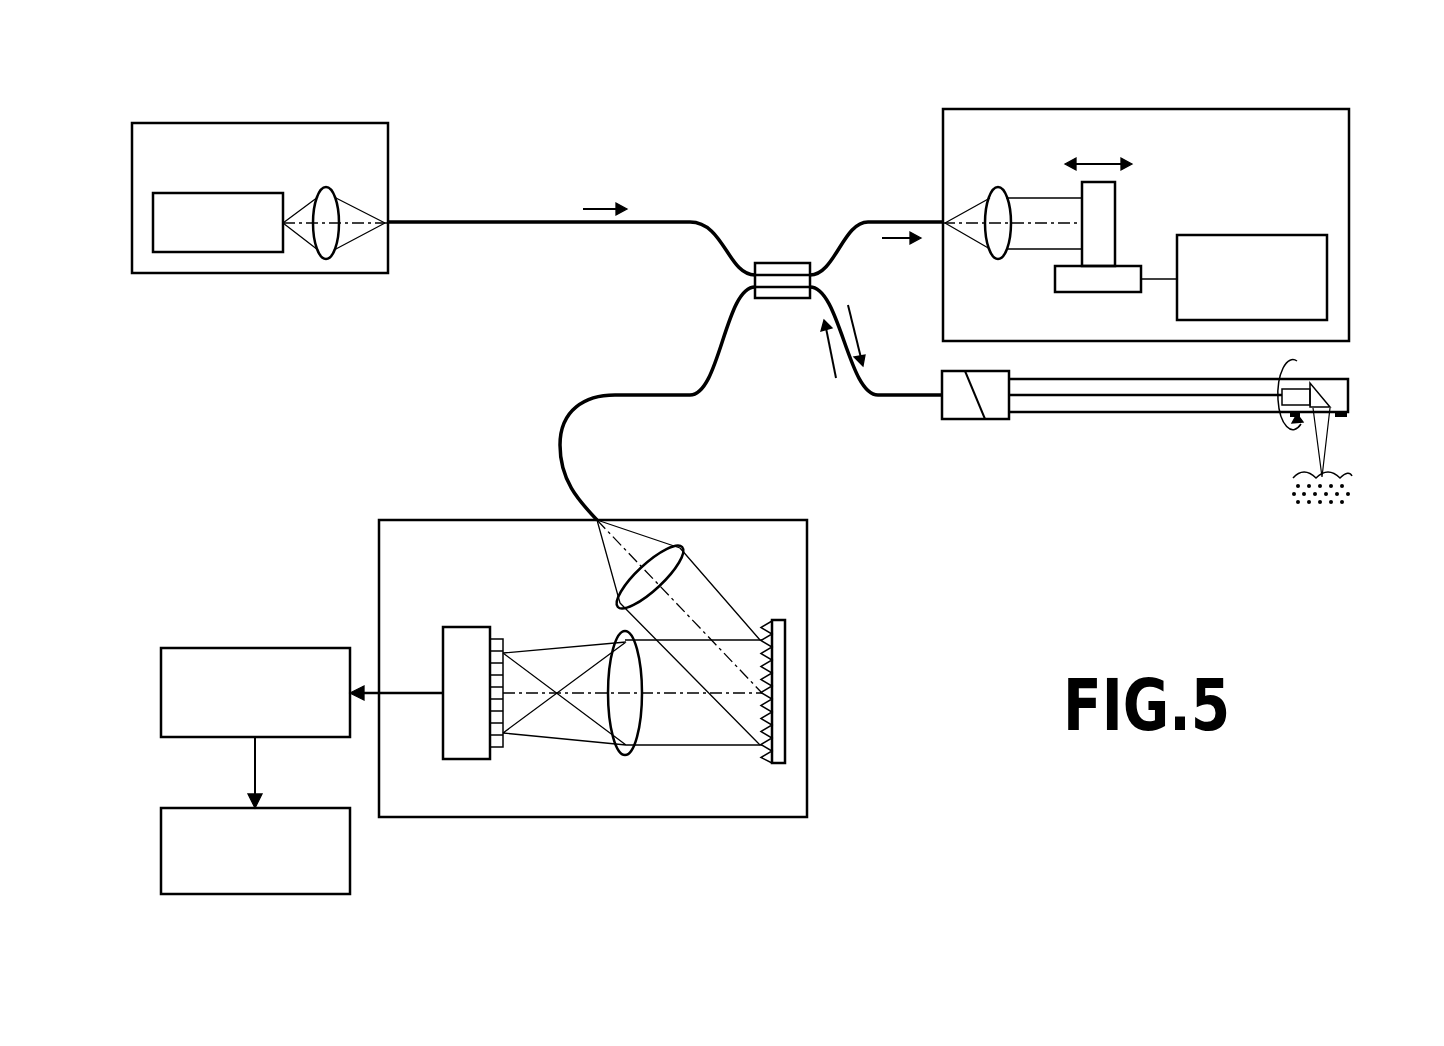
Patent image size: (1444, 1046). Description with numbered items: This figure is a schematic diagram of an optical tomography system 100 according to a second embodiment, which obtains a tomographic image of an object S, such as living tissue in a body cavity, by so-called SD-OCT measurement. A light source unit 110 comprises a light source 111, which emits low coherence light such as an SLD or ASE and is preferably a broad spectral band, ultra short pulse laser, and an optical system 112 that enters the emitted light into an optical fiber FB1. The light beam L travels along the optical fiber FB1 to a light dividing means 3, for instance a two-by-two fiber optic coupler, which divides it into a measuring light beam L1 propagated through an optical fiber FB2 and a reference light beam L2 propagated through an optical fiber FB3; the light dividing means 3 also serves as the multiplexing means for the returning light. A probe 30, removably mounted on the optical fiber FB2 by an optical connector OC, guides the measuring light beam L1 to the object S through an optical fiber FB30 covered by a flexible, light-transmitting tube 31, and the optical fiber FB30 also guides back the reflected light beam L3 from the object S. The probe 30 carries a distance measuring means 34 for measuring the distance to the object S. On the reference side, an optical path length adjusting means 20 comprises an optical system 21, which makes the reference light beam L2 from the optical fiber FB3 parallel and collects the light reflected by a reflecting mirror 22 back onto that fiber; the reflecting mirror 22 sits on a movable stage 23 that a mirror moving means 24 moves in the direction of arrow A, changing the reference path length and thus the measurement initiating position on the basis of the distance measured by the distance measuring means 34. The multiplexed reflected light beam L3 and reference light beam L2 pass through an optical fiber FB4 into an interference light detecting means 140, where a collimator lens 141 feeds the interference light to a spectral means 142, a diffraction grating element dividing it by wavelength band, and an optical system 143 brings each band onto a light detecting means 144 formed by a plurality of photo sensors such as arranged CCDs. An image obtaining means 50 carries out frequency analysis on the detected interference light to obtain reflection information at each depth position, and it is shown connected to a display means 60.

The optical tomography system 100 is at (968, 65).
The light source unit 110 is at (357, 123).
The light source 111 is at (173, 193).
The optical system 112 is at (330, 188).
The optical fiber FB1 is at (524, 226).
The light beam L is at (605, 198).
The light dividing means 3 is at (787, 299).
The optical fiber FB3 is at (890, 222).
The reference light beam L2 is at (901, 252).
The optical fiber FB2 is at (861, 396).
The measuring light beam L1 is at (870, 335).
The reflected light beam L3 is at (817, 350).
The optical fiber FB4 is at (627, 395).
The optical path length adjusting means 20 is at (1205, 98).
The optical system 21 is at (1000, 190).
The reflecting mirror 22 is at (1105, 208).
The movable stage 23 is at (1118, 292).
The mirror moving means 24 is at (1305, 236).
The arrow A is at (1100, 163).
The optical connector OC is at (962, 422).
The probe 30 is at (1209, 426).
The tube 31 is at (1215, 414).
The optical fiber FB30 is at (1078, 401).
The distance measuring means 34 is at (1352, 418).
The object S is at (1345, 475).
The interference light detecting means 140 is at (808, 541).
The collimator lens 141 is at (684, 549).
The spectral means 142 is at (773, 620).
The optical system 143 is at (624, 755).
The light detecting means 144 is at (470, 627).
The image obtaining means 50 is at (180, 648).
The display means 60 is at (180, 808).